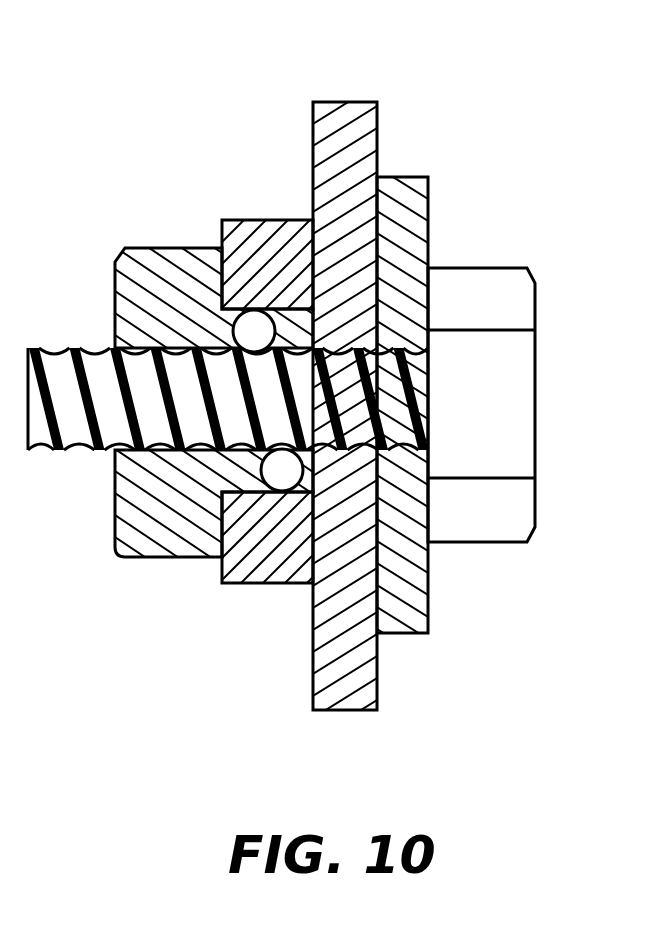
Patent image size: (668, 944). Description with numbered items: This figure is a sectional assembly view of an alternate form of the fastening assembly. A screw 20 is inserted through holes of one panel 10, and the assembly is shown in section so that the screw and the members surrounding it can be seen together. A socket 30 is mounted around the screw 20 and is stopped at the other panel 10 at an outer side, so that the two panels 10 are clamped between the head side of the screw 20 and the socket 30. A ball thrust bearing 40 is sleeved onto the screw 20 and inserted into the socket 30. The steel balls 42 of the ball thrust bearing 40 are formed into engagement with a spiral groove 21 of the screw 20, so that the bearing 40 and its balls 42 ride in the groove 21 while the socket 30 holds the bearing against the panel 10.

The panel 10 is at (345, 130).
The screw 20 is at (527, 383).
The spiral groove 21 is at (80, 450).
The socket 30 is at (250, 558).
The ball thrust bearing 40 is at (158, 508).
The steel balls 42 is at (244, 323).